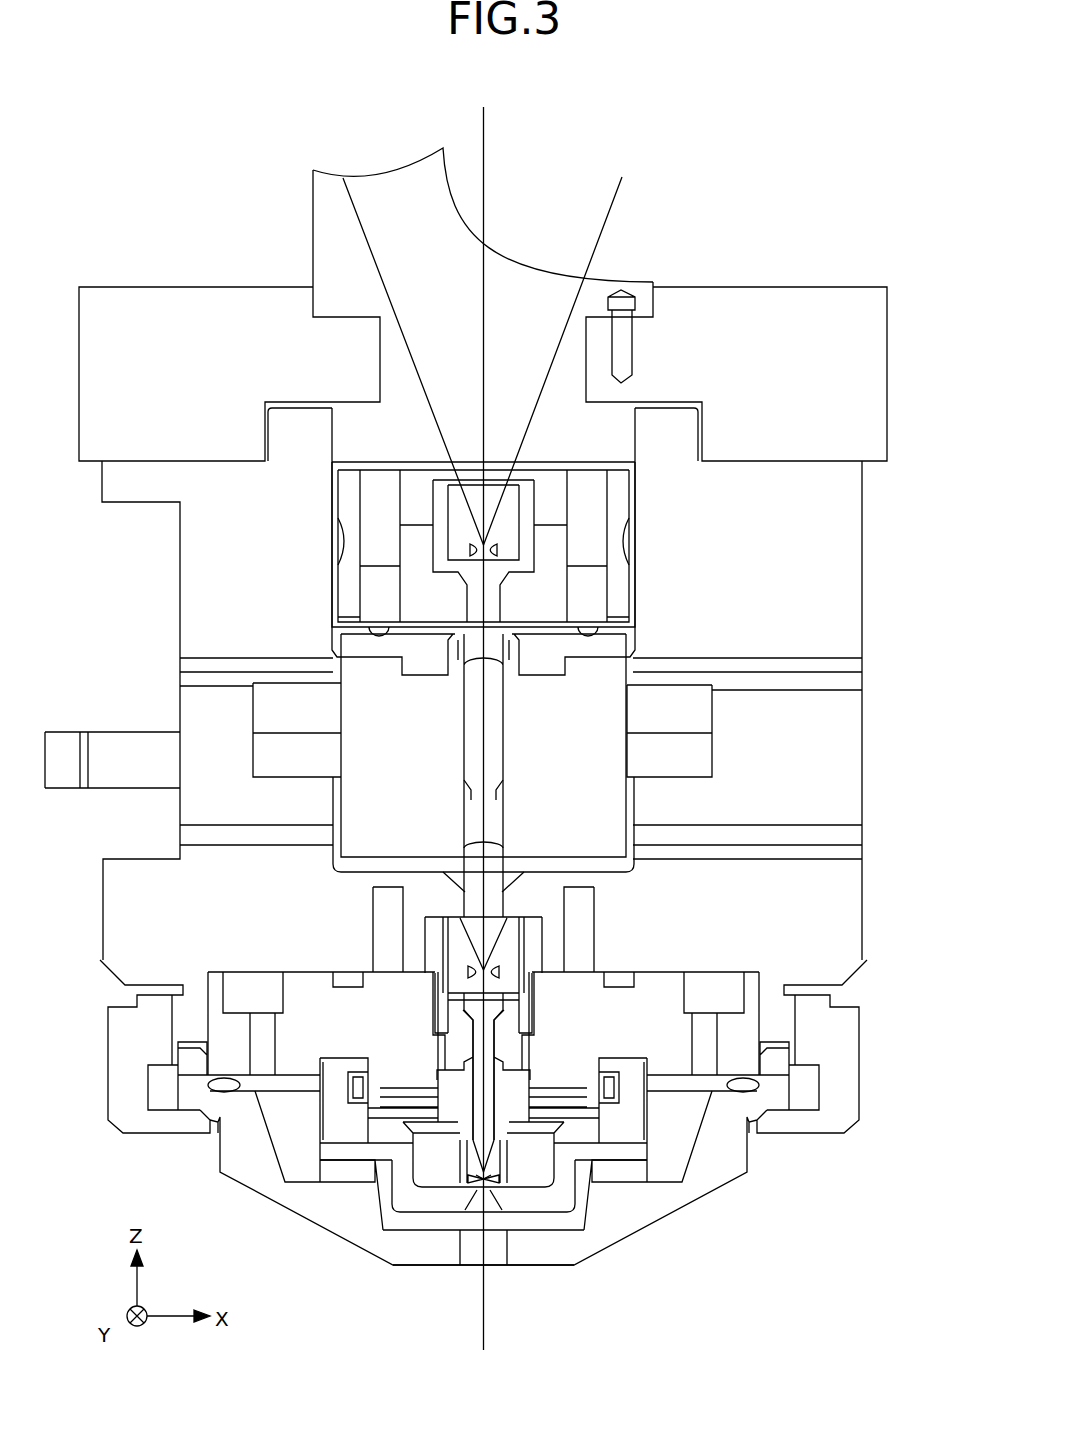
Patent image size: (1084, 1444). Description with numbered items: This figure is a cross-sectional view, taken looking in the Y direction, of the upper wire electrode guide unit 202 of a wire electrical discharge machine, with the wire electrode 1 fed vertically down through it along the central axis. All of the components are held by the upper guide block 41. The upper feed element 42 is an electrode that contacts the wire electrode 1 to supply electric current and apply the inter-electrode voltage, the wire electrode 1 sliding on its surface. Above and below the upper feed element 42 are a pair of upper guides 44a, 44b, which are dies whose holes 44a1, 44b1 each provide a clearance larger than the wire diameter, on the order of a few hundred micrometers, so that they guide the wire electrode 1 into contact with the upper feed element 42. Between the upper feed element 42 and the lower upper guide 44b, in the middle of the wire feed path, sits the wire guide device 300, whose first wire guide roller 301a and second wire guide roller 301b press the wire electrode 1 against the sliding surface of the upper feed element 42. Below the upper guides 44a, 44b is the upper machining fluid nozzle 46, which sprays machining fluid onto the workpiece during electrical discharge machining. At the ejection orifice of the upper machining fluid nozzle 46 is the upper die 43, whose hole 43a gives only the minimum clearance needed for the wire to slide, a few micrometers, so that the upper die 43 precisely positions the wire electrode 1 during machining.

The upper wire electrode guide unit 202 is at (509, 84).
The wire electrode 1 is at (486, 143).
The upper guide block 41 is at (198, 573).
The upper feed element 42 is at (693, 717).
The upper guide 44a is at (505, 520).
The hole 44a1 is at (498, 546).
The wire guide device 300 is at (506, 792).
The first wire guide roller 301a is at (472, 787).
The second wire guide roller 301b is at (496, 787).
The upper guide 44b is at (507, 923).
The hole 44b1 is at (497, 971).
The upper die 43 is at (507, 1168).
The hole 43a is at (497, 1181).
The upper machining fluid nozzle 46 is at (417, 1253).